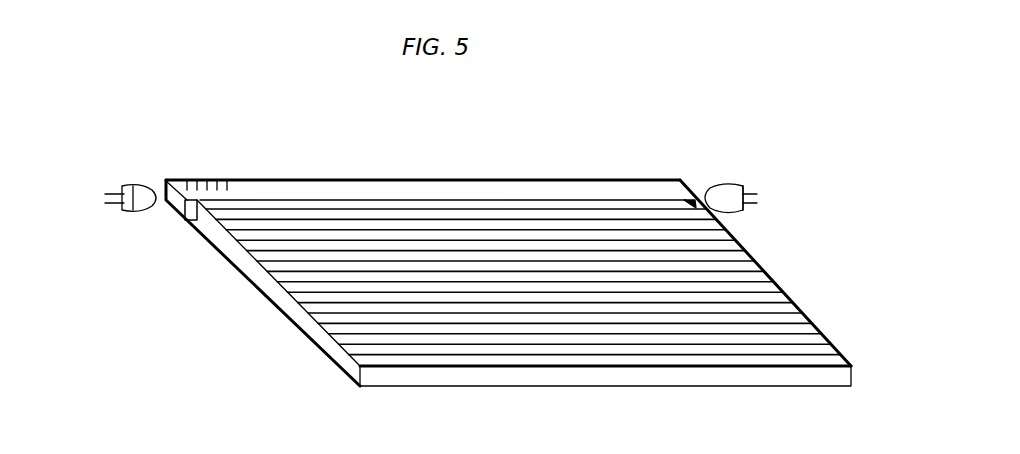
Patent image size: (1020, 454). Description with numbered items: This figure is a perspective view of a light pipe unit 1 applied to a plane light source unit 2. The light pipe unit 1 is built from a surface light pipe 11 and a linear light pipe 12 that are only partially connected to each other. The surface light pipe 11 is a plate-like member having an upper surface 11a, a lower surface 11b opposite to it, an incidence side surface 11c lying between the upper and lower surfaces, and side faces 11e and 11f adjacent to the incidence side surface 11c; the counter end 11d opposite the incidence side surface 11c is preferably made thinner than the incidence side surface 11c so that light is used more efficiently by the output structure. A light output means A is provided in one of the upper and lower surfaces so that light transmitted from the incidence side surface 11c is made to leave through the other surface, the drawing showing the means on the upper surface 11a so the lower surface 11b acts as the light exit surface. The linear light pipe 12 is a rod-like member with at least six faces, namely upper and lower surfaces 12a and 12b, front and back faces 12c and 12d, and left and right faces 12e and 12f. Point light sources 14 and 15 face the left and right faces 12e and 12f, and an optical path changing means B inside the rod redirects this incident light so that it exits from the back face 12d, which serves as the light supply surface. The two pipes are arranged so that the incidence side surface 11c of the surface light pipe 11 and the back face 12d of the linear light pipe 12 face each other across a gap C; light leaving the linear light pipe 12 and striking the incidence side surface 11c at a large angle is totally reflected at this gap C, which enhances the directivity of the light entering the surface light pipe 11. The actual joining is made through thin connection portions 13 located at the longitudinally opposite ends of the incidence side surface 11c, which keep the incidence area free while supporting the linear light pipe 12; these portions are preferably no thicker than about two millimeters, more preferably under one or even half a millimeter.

The light pipe unit 1 is at (543, 137).
The plane light source unit 2 is at (212, 356).
The surface light pipe 11 is at (489, 233).
The upper surface 11a is at (698, 280).
The lower surface 11b is at (333, 366).
The incidence side surface 11c is at (607, 210).
The counter end 11d is at (560, 380).
The side face 11e is at (253, 275).
The side face 11f is at (787, 295).
The linear light pipe 12 is at (527, 186).
The upper surface 12a is at (406, 190).
The lower surface 12b is at (178, 215).
The front face 12c is at (366, 180).
The back face 12d is at (312, 200).
The left face 12e is at (165, 181).
The right face 12f is at (691, 196).
The connection portion 13 is at (200, 222).
The point light source 14 is at (106, 204).
The point light source 15 is at (753, 194).
The light output means A is at (748, 293).
The optical path changing means B is at (204, 178).
The gap C is at (571, 205).